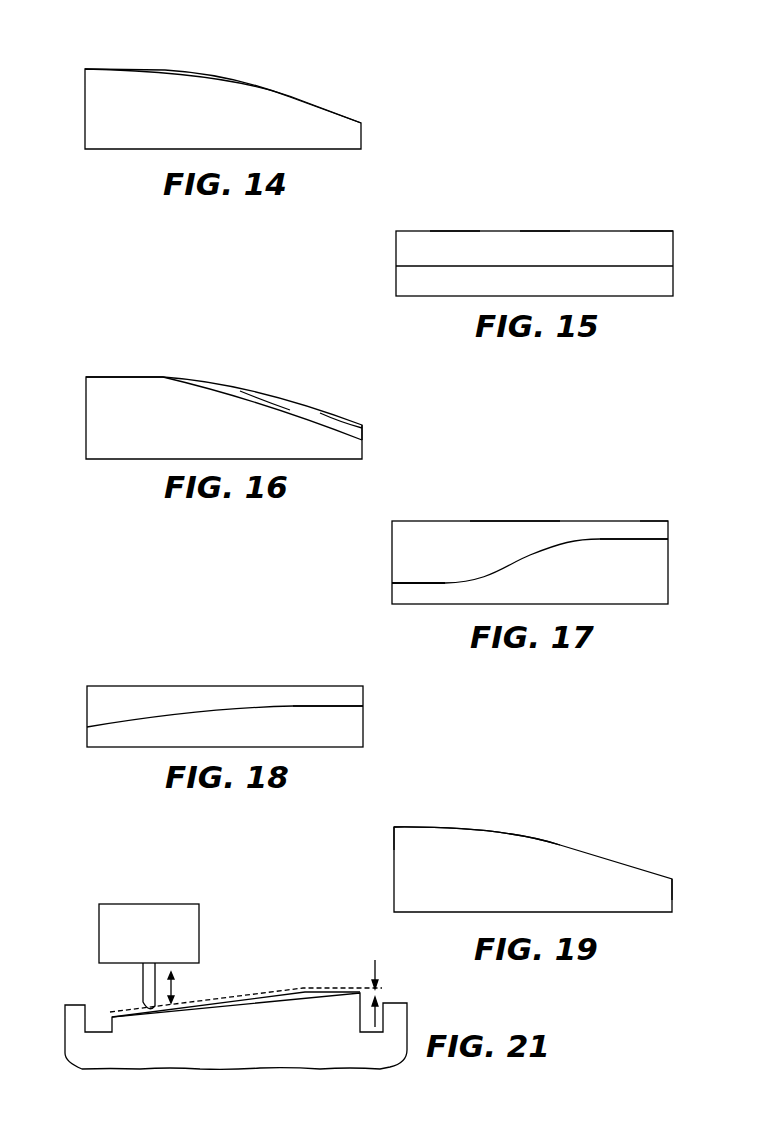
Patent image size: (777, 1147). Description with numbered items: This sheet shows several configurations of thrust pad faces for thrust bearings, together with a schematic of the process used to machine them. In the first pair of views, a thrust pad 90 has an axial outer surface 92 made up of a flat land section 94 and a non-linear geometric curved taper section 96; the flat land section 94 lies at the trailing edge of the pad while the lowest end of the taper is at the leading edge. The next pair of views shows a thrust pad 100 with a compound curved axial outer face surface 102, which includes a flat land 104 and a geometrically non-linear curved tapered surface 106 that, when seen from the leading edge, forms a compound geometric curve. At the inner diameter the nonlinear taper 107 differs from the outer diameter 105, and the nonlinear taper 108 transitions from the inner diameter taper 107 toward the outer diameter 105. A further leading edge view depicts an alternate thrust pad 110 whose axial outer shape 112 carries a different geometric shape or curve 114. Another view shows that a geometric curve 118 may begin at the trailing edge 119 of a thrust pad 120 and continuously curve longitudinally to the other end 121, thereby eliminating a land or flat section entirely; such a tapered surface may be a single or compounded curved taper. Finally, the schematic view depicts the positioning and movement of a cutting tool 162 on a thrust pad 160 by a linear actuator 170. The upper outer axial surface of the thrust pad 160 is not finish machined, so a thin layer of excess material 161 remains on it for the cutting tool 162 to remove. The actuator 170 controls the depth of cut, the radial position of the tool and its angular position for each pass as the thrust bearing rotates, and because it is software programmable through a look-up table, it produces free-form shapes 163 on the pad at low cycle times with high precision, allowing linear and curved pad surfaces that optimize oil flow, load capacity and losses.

In FIG. 14, the thrust pad 90 is at (117, 106).
In FIG. 15, the thrust pad 90 is at (398, 245).
In FIG. 14, the axial outer surface 92 is at (260, 87).
In FIG. 15, the axial outer surface 92 is at (546, 252).
In FIG. 14, the flat land section 94 is at (128, 69).
In FIG. 15, the flat land section 94 is at (458, 230).
In FIG. 14, the non-linear geometric curved taper section 96 is at (307, 102).
In FIG. 15, the non-linear geometric curved taper section 96 is at (652, 243).
In FIG. 16, the thrust pad 100 is at (112, 419).
In FIG. 17, the thrust pad 100 is at (392, 557).
In FIG. 16, the compound curved axial outer face surface 102 is at (253, 382).
In FIG. 17, the compound curved axial outer face surface 102 is at (592, 500).
In FIG. 16, the flat land 104 is at (113, 375).
In FIG. 17, the flat land 104 is at (517, 520).
In FIG. 17, the outer diameter 105 is at (668, 528).
In FIG. 16, the geometrically non-linear curved tapered surface 106 is at (338, 430).
In FIG. 17, the geometrically non-linear curved tapered surface 106 is at (438, 560).
In FIG. 16, the nonlinear taper at inner diameter 107 is at (267, 405).
In FIG. 17, the nonlinear taper at inner diameter 107 is at (392, 567).
In FIG. 16, the nonlinear taper 108 is at (363, 432).
In FIG. 17, the nonlinear taper 108 is at (640, 540).
In FIG. 18, the alternate thrust pad 110 is at (88, 710).
In FIG. 18, the axial outer shape 112 is at (252, 693).
In FIG. 18, the geometric shape or curve 114 is at (292, 706).
In FIG. 19, the geometric curve 118 is at (545, 839).
In FIG. 19, the trailing edge 119 is at (392, 823).
In FIG. 19, the thrust pad 120 is at (405, 853).
In FIG. 19, the other end 121 is at (673, 878).
In FIG. 21, the thrust pad 160 is at (237, 1052).
In FIG. 21, the excess material 161 is at (305, 990).
In FIG. 21, the cutting tool 162 is at (147, 979).
In FIG. 21, the free-form shapes 163 is at (238, 1000).
In FIG. 21, the linear actuator 170 is at (99, 922).